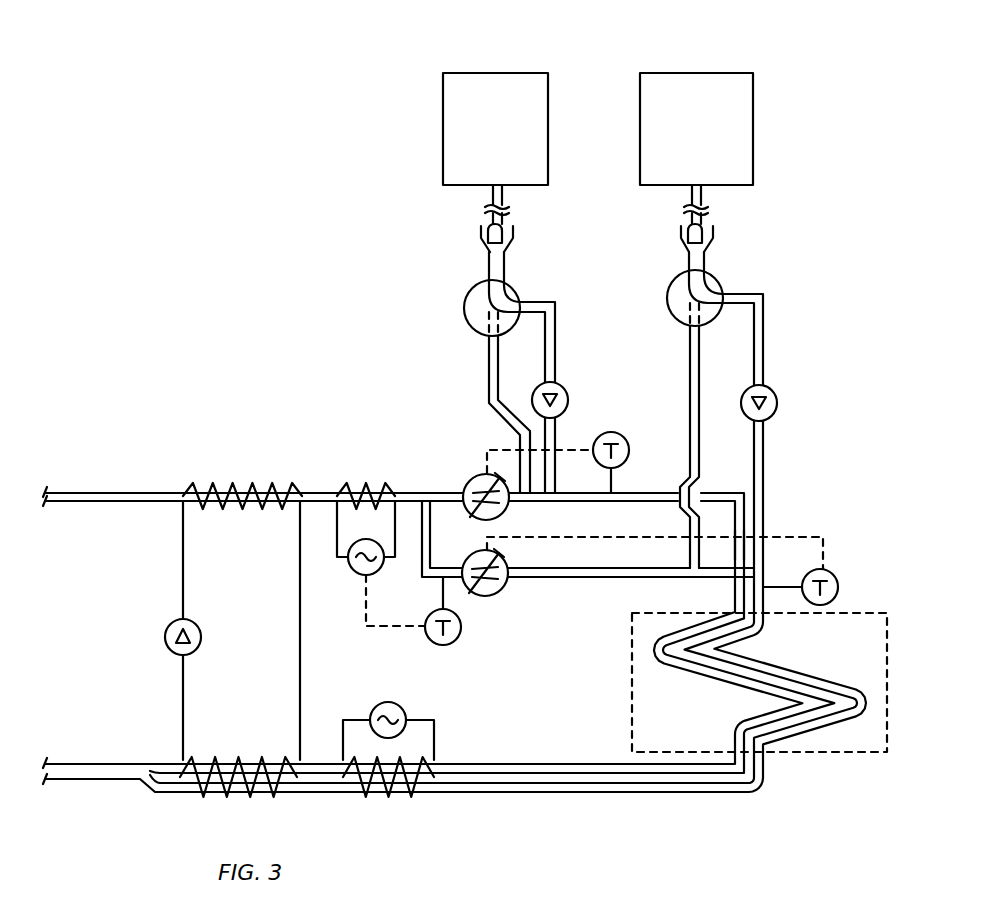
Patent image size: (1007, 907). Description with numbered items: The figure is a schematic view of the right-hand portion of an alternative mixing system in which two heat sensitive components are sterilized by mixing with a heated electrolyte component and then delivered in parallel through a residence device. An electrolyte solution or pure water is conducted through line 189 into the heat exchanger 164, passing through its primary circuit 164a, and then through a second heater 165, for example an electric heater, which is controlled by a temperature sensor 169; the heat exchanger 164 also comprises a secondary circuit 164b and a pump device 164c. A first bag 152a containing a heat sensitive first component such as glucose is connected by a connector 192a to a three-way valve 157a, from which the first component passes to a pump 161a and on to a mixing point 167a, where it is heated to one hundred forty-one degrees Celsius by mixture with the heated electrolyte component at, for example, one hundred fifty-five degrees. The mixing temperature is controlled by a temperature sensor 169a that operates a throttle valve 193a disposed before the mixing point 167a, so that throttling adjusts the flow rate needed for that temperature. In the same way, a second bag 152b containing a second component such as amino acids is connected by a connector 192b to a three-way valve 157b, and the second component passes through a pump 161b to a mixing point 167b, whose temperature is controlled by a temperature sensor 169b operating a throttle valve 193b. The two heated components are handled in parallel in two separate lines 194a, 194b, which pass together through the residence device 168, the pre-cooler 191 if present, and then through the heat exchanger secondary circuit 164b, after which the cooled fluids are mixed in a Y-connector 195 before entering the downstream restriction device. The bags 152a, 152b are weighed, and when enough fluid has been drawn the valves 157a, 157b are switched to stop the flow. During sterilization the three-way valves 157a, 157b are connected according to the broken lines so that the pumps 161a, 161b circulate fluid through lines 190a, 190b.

The first bag 152a is at (504, 72).
The second bag 152b is at (718, 72).
The connector 192a is at (516, 233).
The connector 192b is at (720, 233).
The three-way valve 157a is at (516, 286).
The three-way valve 157b is at (722, 280).
The line 190a is at (485, 360).
The line 190b is at (690, 358).
The pump 161a is at (568, 402).
The pump 161b is at (777, 402).
The temperature sensor 169a is at (613, 432).
The temperature sensor 169b is at (834, 572).
The mixing point 167a is at (538, 504).
The mixing point 167b is at (767, 570).
The line 194a is at (740, 494).
The line 194b is at (766, 504).
The heat exchanger 164 is at (219, 457).
The primary circuit 164a is at (287, 487).
The secondary circuit 164b is at (265, 758).
The pump device 164c is at (201, 648).
The second heater 165 is at (372, 483).
The line 189 is at (419, 487).
The throttle valve 193a is at (478, 474).
The throttle valve 193b is at (500, 595).
The temperature sensor 169 is at (452, 645).
The residence device 168 is at (632, 664).
The pre-cooler 191 is at (436, 724).
The Y-connector 195 is at (142, 792).